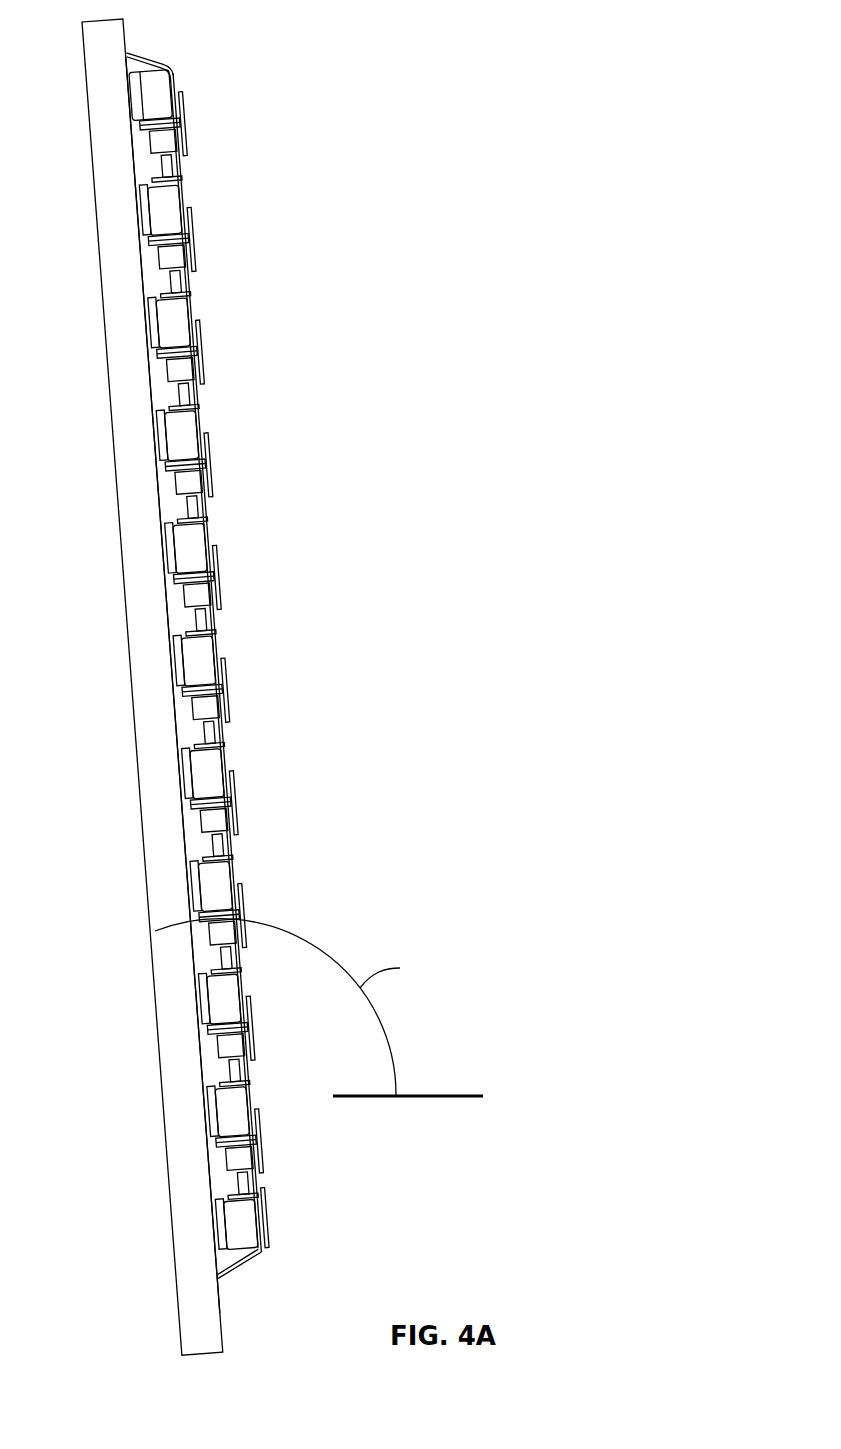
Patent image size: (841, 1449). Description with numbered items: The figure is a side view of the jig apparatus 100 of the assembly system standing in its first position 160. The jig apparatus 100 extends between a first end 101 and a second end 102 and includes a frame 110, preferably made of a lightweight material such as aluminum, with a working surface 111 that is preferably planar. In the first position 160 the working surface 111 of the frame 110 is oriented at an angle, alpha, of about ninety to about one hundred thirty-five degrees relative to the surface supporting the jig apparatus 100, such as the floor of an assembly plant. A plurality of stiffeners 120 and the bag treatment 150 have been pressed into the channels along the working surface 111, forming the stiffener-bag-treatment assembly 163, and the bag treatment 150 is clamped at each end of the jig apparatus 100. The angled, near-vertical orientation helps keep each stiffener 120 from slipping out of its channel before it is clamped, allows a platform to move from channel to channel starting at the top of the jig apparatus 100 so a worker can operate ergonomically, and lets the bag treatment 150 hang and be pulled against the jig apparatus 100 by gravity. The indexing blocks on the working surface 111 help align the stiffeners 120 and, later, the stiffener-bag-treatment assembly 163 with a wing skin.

The jig apparatus 100 is at (352, 230).
The first end 101 is at (167, 48).
The second end 102 is at (256, 1316).
The frame 110 is at (142, 562).
The working surface 111 is at (172, 622).
The stiffener 120 is at (182, 130).
The bag treatment 150 is at (150, 243).
The first position 160 is at (275, 106).
The stiffener-bag-treatment assembly 163 is at (288, 438).